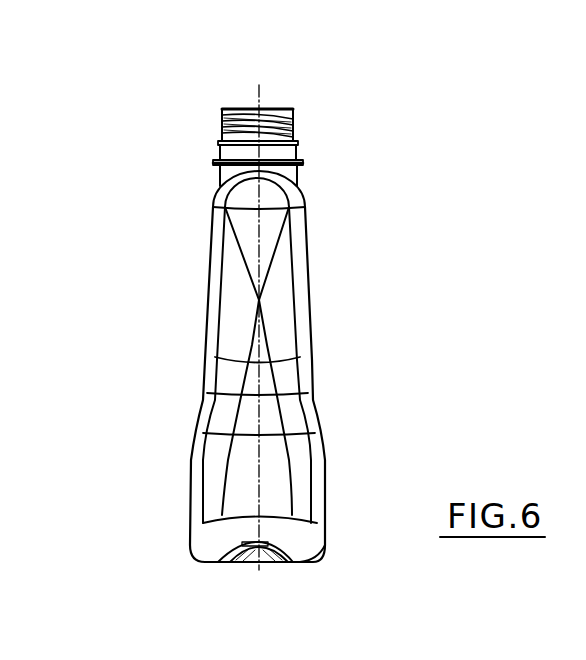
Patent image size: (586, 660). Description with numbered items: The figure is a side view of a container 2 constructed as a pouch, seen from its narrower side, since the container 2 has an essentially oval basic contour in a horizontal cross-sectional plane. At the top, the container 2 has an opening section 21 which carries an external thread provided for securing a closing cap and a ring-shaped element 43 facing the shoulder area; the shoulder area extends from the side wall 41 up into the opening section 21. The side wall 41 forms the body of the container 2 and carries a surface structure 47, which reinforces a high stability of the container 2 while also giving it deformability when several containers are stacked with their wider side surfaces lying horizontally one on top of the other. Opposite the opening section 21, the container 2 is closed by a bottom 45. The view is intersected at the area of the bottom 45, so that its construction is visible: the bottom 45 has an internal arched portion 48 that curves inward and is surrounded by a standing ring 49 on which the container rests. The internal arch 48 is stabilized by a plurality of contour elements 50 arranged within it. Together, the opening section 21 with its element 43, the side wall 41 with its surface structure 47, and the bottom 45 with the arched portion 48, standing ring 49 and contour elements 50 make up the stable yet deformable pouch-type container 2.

The container 2 is at (152, 317).
The opening section 21 is at (233, 107).
The support ring / collar 43 is at (215, 158).
The side wall 41 is at (283, 302).
The surface structure 47 is at (280, 413).
The internal arched portion 48 is at (243, 563).
The bottom 45 is at (272, 565).
The contour elements 50 is at (260, 564).
The standing ring 49 is at (310, 562).